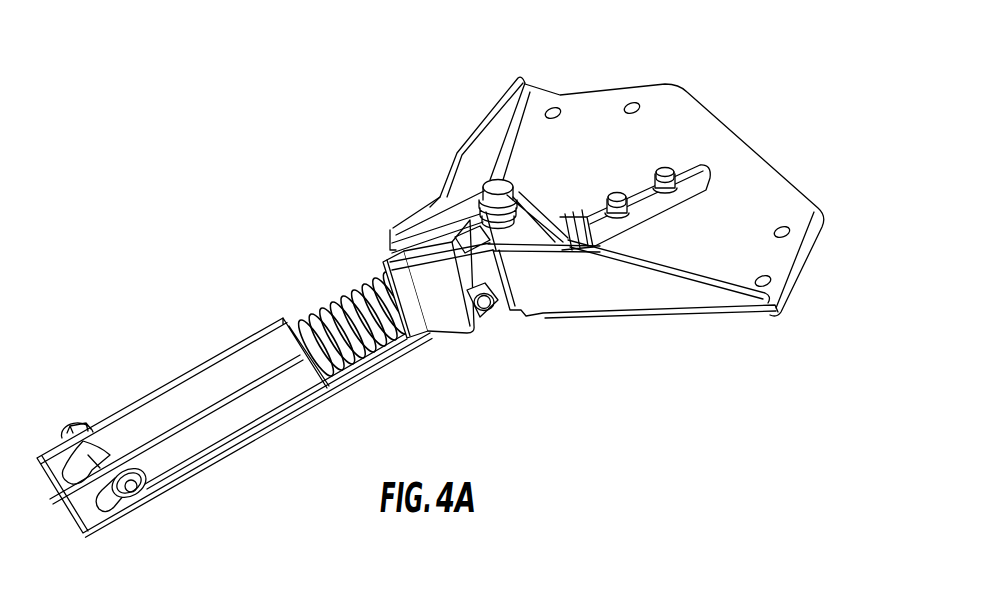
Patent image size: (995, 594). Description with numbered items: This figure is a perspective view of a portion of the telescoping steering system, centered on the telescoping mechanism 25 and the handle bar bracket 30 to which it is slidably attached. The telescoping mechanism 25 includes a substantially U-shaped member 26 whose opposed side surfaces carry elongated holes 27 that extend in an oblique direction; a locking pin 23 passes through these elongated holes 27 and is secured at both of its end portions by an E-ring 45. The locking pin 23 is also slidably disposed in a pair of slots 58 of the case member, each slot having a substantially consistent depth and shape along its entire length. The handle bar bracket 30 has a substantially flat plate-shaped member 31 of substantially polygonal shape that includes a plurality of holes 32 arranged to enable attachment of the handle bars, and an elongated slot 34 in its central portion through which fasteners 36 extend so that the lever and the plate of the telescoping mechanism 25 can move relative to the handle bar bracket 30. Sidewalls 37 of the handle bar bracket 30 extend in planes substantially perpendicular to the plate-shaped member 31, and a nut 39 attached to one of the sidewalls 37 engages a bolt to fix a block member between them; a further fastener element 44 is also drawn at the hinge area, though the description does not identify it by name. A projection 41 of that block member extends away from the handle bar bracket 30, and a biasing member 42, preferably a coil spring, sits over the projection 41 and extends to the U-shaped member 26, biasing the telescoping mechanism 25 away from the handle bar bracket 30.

The locking pin 23 is at (139, 496).
The telescoping mechanism 25 is at (356, 380).
The substantially U-shaped member 26 is at (252, 417).
The elongated holes 27 is at (104, 502).
The handle bar bracket 30 is at (668, 312).
The plate-shaped member 31 is at (770, 186).
The holes 32 is at (630, 103).
The elongated slot 34 is at (612, 195).
The fasteners 36 is at (668, 166).
The sidewalls 37 is at (475, 128).
The nut 39 is at (486, 310).
The projection 41 is at (366, 292).
The biasing member 42 is at (332, 308).
The pivot bolt 44 is at (483, 187).
The E-ring 45 is at (84, 422).
The slots 58 is at (384, 260).